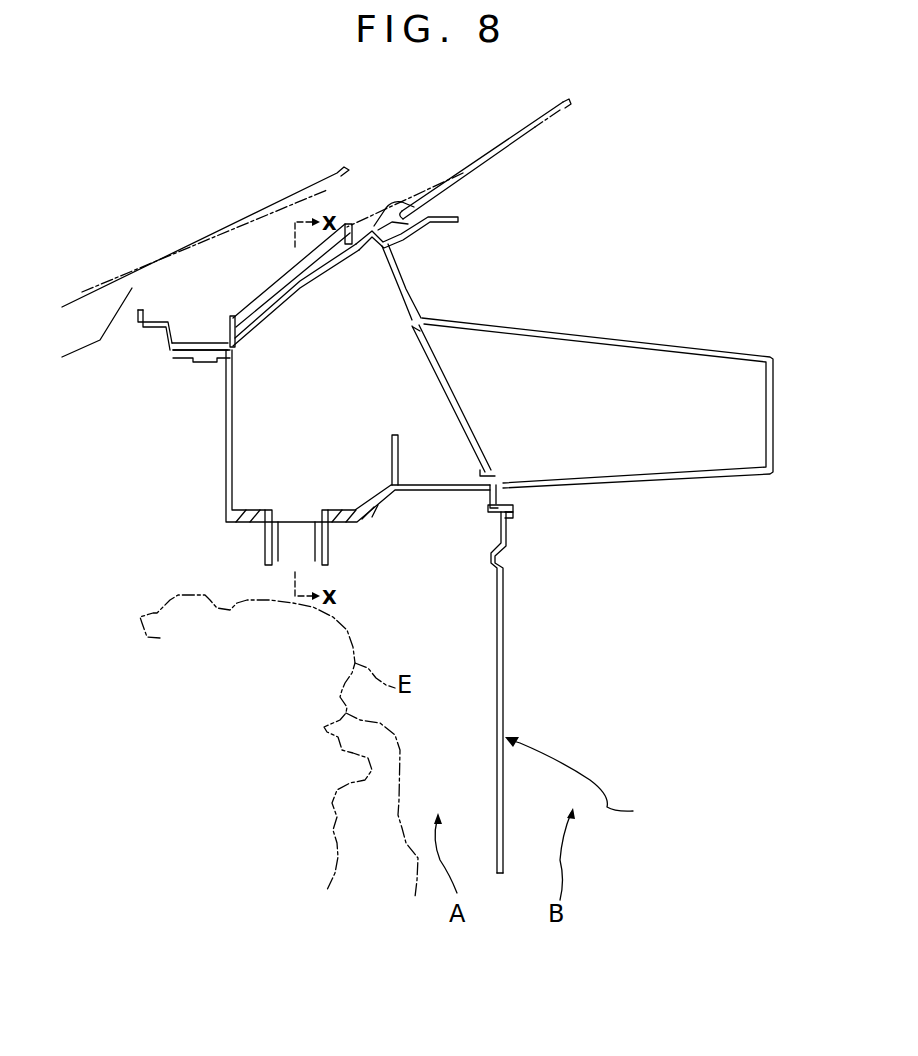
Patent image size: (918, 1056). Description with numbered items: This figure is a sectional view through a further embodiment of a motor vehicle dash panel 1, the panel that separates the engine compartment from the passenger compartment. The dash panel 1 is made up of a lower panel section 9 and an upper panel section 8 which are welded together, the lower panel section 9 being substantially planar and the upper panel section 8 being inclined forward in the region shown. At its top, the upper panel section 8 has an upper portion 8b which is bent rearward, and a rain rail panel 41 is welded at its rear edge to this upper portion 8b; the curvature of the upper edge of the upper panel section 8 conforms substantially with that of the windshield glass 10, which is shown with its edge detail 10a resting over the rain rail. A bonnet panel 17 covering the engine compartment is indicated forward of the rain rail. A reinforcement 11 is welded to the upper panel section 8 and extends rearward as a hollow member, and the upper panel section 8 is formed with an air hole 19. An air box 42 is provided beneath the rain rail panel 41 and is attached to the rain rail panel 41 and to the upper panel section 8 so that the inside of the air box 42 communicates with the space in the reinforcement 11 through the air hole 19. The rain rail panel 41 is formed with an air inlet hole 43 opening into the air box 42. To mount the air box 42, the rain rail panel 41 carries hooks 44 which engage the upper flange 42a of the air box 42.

The dash panel 1 is at (576, 782).
The upper panel section 8 is at (406, 278).
The upper portion 8b is at (426, 232).
The lower panel section 9 is at (503, 668).
The windshield glass 10 is at (530, 138).
The glass edge clip 10a is at (409, 202).
The reinforcement 11 is at (716, 355).
The bonnet panel 17 is at (94, 291).
The air hole 19 is at (425, 336).
The rain rail panel 41 is at (157, 324).
The air box 42 is at (228, 501).
The upper flange 42a is at (210, 362).
The air inlet hole 43 is at (250, 323).
The hooks 44 is at (170, 358).